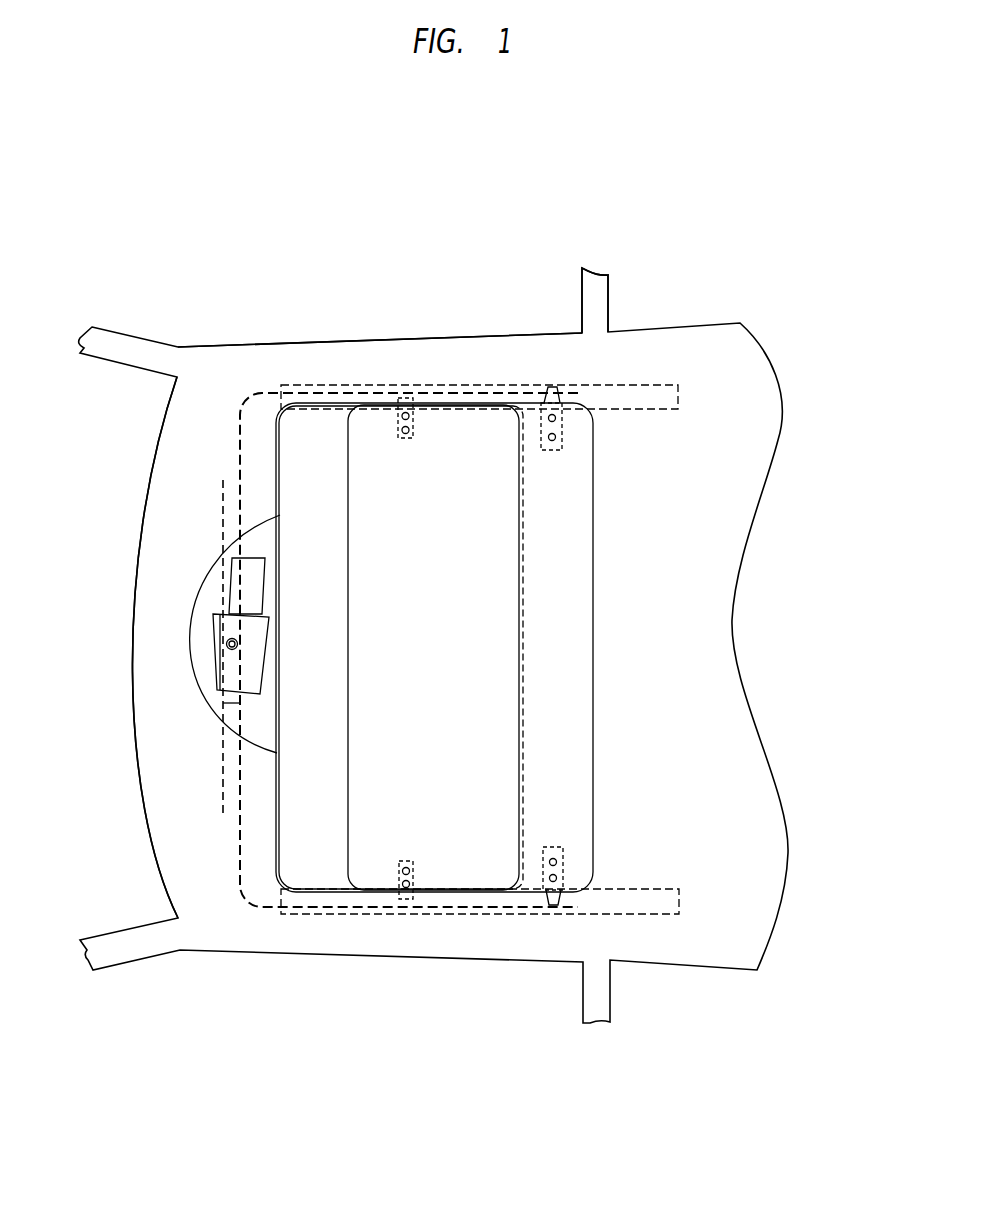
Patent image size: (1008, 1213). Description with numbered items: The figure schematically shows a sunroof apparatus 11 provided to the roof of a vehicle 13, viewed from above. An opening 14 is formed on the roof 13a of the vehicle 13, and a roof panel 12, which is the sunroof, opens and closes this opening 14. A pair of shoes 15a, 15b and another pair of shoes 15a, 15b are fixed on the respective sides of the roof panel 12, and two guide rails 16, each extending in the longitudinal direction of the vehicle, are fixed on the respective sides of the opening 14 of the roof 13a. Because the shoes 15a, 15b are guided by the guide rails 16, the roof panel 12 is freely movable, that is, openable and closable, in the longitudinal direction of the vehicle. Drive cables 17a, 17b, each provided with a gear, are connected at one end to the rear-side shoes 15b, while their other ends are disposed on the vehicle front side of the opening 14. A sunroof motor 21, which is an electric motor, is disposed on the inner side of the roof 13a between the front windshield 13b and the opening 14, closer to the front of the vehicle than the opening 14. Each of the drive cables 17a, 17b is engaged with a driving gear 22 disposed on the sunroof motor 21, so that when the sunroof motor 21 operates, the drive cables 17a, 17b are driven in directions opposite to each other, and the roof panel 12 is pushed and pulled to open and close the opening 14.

The sunroof apparatus 11 is at (485, 354).
The roof panel 12 is at (565, 668).
The vehicle 13 is at (722, 283).
The roof 13a is at (248, 372).
The front windshield 13b is at (125, 456).
The opening 14 is at (325, 655).
The shoe 15a is at (413, 417).
The shoe 15b is at (567, 427).
The guide rail 16 is at (638, 398).
The drive cable 17a is at (240, 407).
The drive cable 17b is at (228, 897).
The sunroof motor 21 is at (213, 657).
The driving gear 22 is at (228, 642).